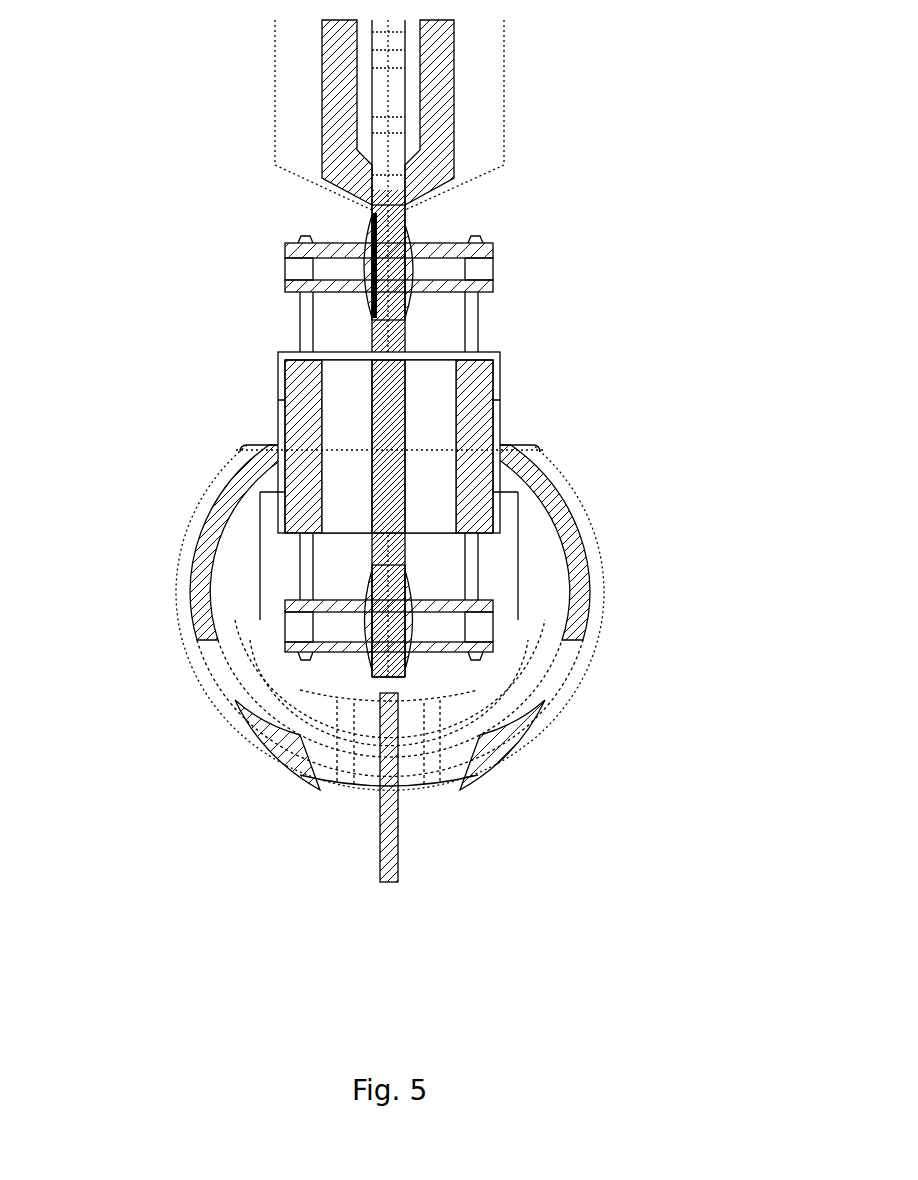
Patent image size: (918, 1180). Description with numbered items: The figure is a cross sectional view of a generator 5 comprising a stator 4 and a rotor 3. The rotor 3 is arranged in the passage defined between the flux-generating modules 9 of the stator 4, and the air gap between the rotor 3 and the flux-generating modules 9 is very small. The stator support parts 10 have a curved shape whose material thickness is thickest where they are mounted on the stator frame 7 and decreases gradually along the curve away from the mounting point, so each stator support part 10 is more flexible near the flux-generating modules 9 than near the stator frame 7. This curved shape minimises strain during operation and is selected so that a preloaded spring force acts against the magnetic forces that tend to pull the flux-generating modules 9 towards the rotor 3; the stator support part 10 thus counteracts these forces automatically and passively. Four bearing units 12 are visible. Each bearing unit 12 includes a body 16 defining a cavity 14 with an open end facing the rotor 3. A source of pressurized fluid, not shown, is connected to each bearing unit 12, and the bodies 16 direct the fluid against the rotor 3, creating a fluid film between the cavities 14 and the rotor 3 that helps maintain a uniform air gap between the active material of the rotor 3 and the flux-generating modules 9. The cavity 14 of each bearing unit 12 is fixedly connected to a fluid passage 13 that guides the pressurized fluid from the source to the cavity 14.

The rotor 3 is at (375, 213).
The stator 4 is at (637, 523).
The generator 5 is at (707, 97).
The stator frame 7 is at (383, 860).
The flux-generating module 9 is at (300, 418).
The stator support part 10 is at (242, 713).
The bearing unit 12 is at (313, 250).
The fluid passage 13 is at (313, 268).
The cavity 14 is at (408, 267).
The body 16 is at (370, 292).